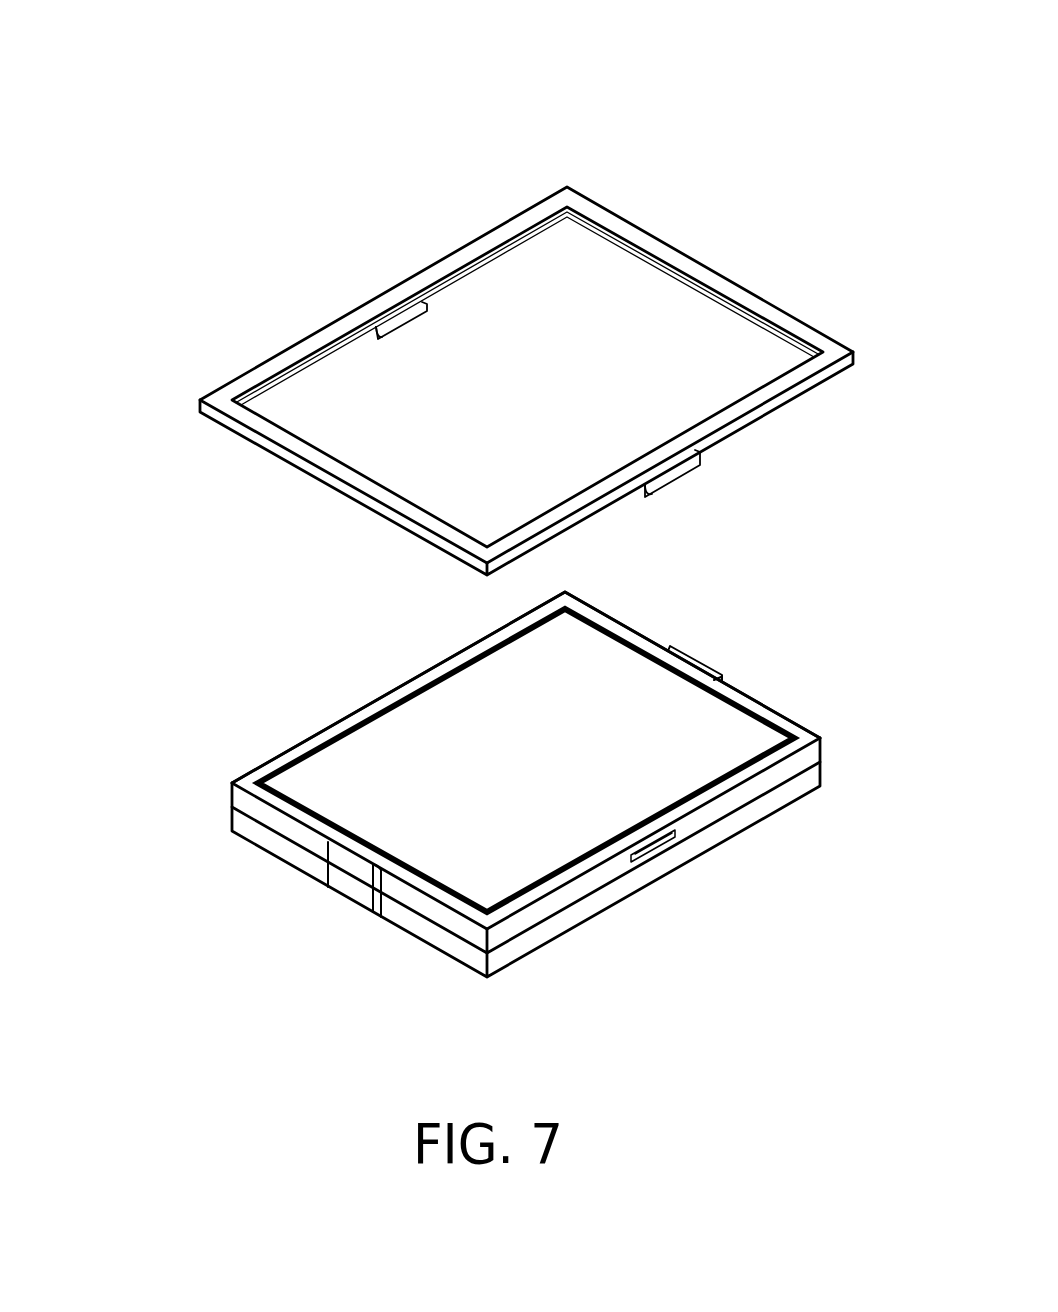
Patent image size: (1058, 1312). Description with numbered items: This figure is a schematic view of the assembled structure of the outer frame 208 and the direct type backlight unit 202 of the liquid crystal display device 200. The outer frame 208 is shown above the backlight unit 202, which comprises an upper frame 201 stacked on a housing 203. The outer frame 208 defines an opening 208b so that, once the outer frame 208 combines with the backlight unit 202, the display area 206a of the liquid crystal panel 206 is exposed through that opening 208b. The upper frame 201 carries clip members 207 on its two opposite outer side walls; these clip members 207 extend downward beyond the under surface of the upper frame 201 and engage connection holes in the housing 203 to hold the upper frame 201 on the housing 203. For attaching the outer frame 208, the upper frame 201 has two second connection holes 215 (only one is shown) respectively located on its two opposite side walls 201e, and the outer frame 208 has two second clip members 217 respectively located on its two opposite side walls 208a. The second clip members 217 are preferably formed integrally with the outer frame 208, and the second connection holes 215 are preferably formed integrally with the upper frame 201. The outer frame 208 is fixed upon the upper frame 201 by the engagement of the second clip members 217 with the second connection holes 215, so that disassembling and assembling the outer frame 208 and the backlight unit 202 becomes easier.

The liquid crystal display device 200 is at (197, 97).
The upper frame 201 is at (237, 798).
The side walls 201e is at (288, 753).
The direct type backlight unit 202 is at (110, 732).
The housing 203 is at (237, 826).
The liquid crystal panel 206 is at (352, 760).
The display area 206a is at (712, 737).
The clip members 207 is at (690, 667).
The outer frame 208 is at (205, 408).
The side walls 208a is at (412, 278).
The opening 208b is at (602, 325).
The second connection holes 215 is at (650, 852).
The second clip members 217 is at (410, 328).